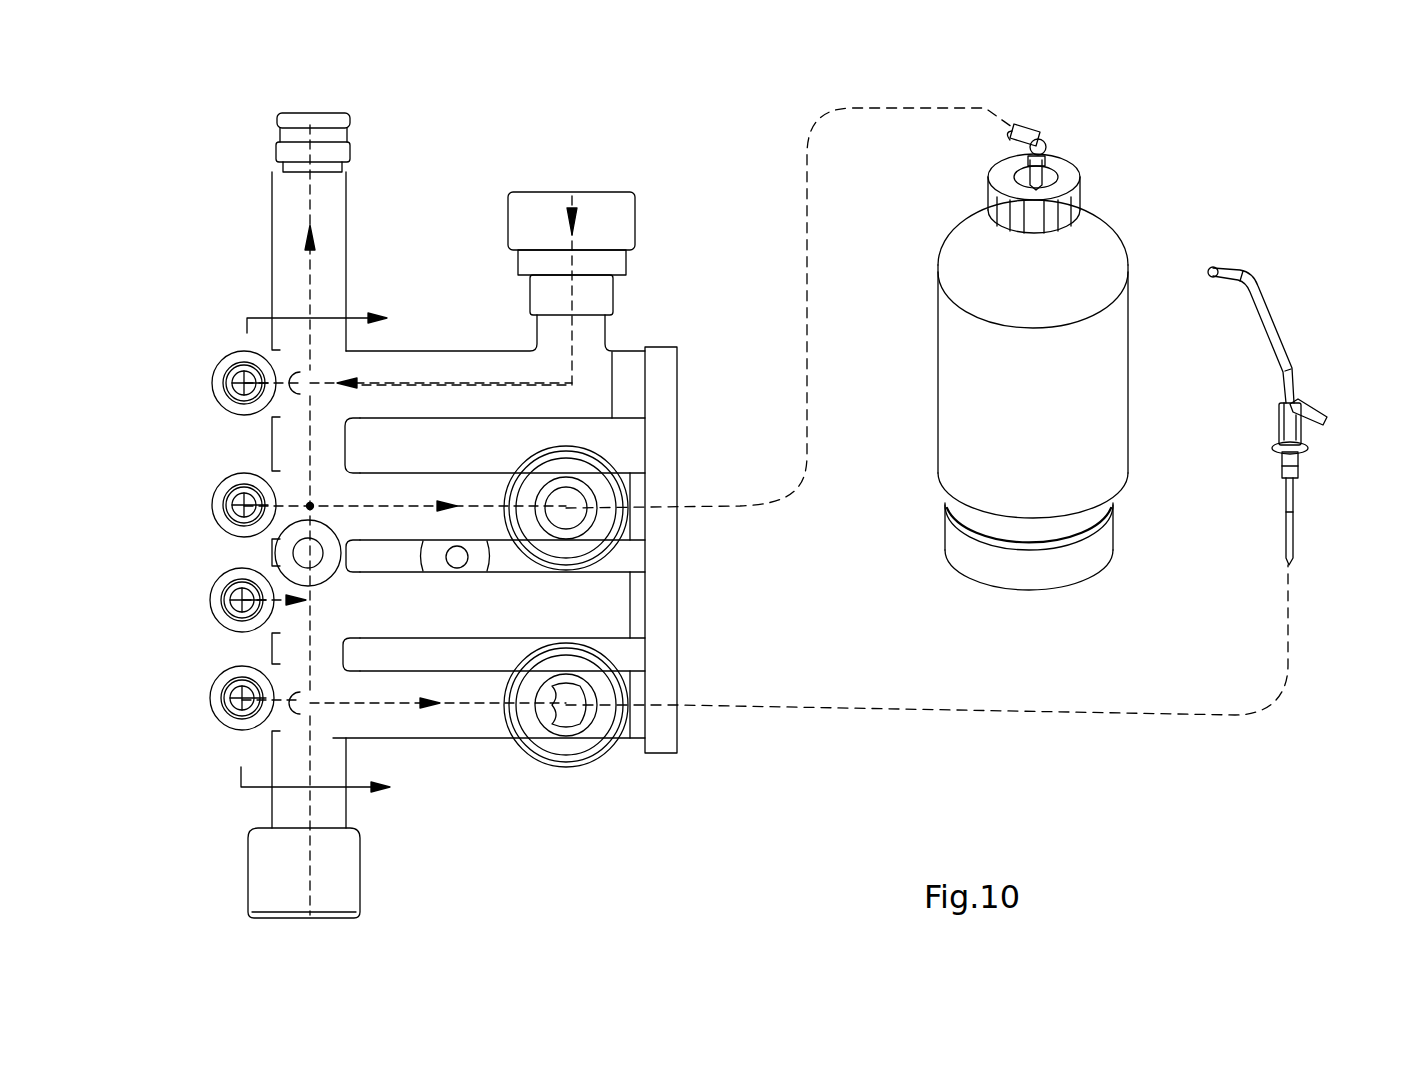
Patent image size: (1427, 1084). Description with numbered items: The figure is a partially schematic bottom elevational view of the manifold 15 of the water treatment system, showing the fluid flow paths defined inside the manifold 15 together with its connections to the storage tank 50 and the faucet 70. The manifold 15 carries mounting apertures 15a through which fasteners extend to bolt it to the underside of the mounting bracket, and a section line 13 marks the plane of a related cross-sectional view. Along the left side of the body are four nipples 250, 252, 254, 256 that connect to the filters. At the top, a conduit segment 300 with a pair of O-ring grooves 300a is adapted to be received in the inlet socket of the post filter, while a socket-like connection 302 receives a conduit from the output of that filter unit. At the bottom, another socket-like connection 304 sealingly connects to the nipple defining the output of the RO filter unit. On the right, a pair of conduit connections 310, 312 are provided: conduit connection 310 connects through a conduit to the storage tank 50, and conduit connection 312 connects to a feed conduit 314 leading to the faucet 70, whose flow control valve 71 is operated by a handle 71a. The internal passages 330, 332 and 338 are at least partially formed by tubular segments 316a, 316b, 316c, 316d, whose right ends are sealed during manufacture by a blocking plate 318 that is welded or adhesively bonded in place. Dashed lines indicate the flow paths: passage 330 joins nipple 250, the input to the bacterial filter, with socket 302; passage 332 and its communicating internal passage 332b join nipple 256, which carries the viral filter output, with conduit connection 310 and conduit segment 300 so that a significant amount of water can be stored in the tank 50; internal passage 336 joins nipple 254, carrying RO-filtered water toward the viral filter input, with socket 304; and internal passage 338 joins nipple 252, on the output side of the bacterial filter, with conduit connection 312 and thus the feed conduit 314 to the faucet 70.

The section line 13- 13 is at (315, 554).
The manifold 15 is at (688, 213).
The mounting apertures 15a is at (308, 553).
The storage tank 50 is at (1016, 423).
The faucet 70 is at (1268, 338).
The flow control valve 71 is at (1283, 421).
The operating handle 71a is at (1313, 410).
The nipple 250 is at (220, 375).
The nipple 252 is at (214, 704).
The nipple 254 is at (214, 598).
The nipple 256 is at (218, 495).
The conduit segment 300 is at (340, 218).
The O-ring grooves 300a is at (346, 163).
The socket-like connection 302 is at (601, 215).
The socket-like connection 304 is at (265, 872).
The conduit connection 310 is at (593, 482).
The conduit connection 312 is at (603, 698).
The feed conduit 314 is at (1294, 534).
The tubular segment 316a is at (628, 368).
The tubular segment 316b is at (640, 528).
The tubular segment 316c is at (628, 613).
The tubular segment 316d is at (633, 737).
The blocking plate 318 is at (663, 393).
The passage 330 is at (572, 345).
The passage 332 is at (405, 503).
The internal passage 332b is at (308, 215).
The internal passage 336 is at (310, 855).
The internal passage 338 is at (468, 702).